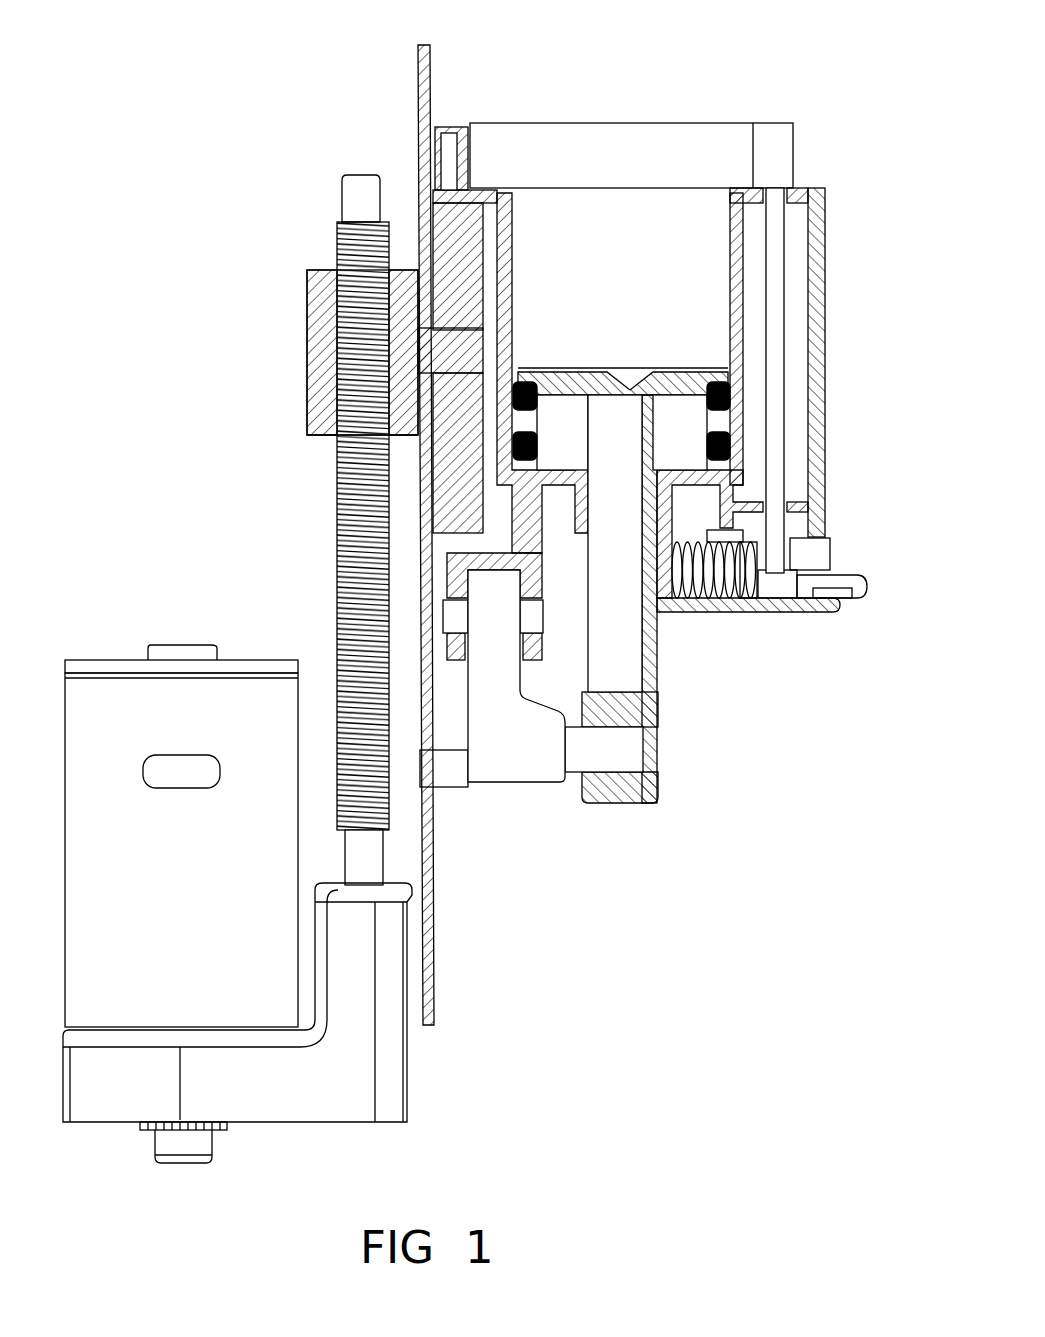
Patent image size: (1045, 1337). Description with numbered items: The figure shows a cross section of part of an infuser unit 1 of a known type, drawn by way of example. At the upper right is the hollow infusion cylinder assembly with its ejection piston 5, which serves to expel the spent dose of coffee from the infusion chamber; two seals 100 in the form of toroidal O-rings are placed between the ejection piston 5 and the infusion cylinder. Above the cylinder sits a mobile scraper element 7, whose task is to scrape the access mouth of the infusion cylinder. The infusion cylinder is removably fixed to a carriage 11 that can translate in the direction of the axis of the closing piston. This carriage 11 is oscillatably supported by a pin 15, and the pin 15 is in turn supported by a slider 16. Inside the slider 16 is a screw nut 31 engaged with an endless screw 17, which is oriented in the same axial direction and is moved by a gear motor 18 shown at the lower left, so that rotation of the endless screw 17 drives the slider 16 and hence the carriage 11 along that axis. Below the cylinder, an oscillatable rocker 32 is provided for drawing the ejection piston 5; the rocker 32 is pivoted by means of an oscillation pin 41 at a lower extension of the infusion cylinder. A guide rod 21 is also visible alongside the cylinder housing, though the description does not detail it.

The infuser unit 1 is at (353, 128).
The ejection piston 5 is at (673, 383).
The mobile scraper element 7 is at (745, 103).
The carriage 11 is at (481, 526).
The pin 15 is at (457, 355).
The slider 16 is at (307, 317).
The endless screw 17 is at (337, 513).
The gear motor 18 is at (260, 643).
The guide rod 21 is at (775, 248).
The screw nut 31 is at (307, 365).
The oscillatable rocker 32 is at (514, 745).
The oscillation pin 41 is at (457, 607).
The seals 100 is at (737, 402).